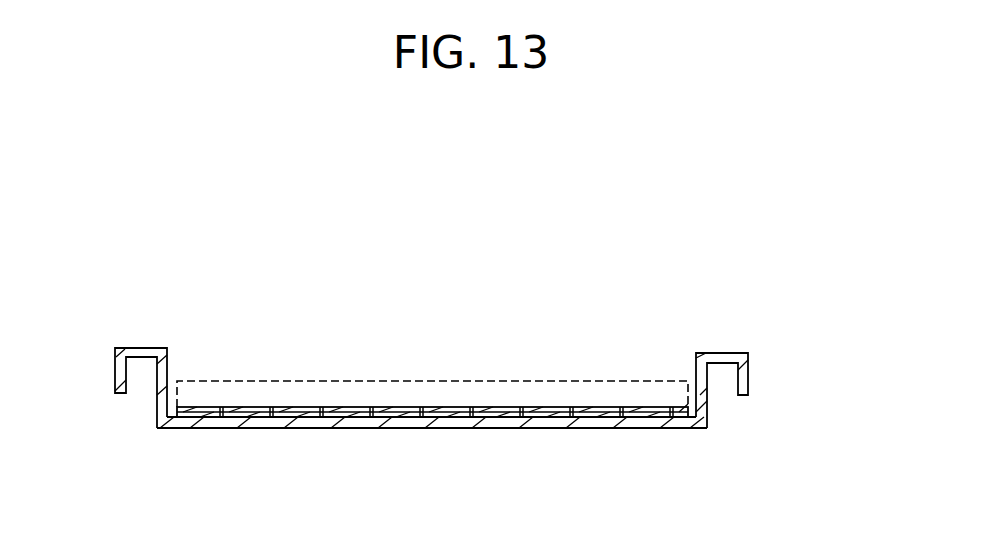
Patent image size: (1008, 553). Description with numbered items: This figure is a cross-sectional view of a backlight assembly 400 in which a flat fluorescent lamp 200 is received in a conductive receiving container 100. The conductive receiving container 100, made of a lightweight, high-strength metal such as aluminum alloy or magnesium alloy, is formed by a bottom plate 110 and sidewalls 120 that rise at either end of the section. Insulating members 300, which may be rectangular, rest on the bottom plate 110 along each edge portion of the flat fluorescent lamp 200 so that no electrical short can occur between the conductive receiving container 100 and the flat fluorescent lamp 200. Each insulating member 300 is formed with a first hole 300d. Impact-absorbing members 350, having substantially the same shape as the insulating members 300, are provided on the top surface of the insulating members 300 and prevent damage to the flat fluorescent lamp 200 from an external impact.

The backlight assembly 400 is at (580, 300).
The conductive receiving container 100 is at (638, 488).
The bottom plate 110 is at (657, 424).
The sidewalls 120 is at (708, 400).
The flat fluorescent lamp 200 is at (430, 381).
The insulating member 300 is at (558, 418).
The first hole 300d is at (322, 428).
The impact-absorbing member 350 is at (321, 407).